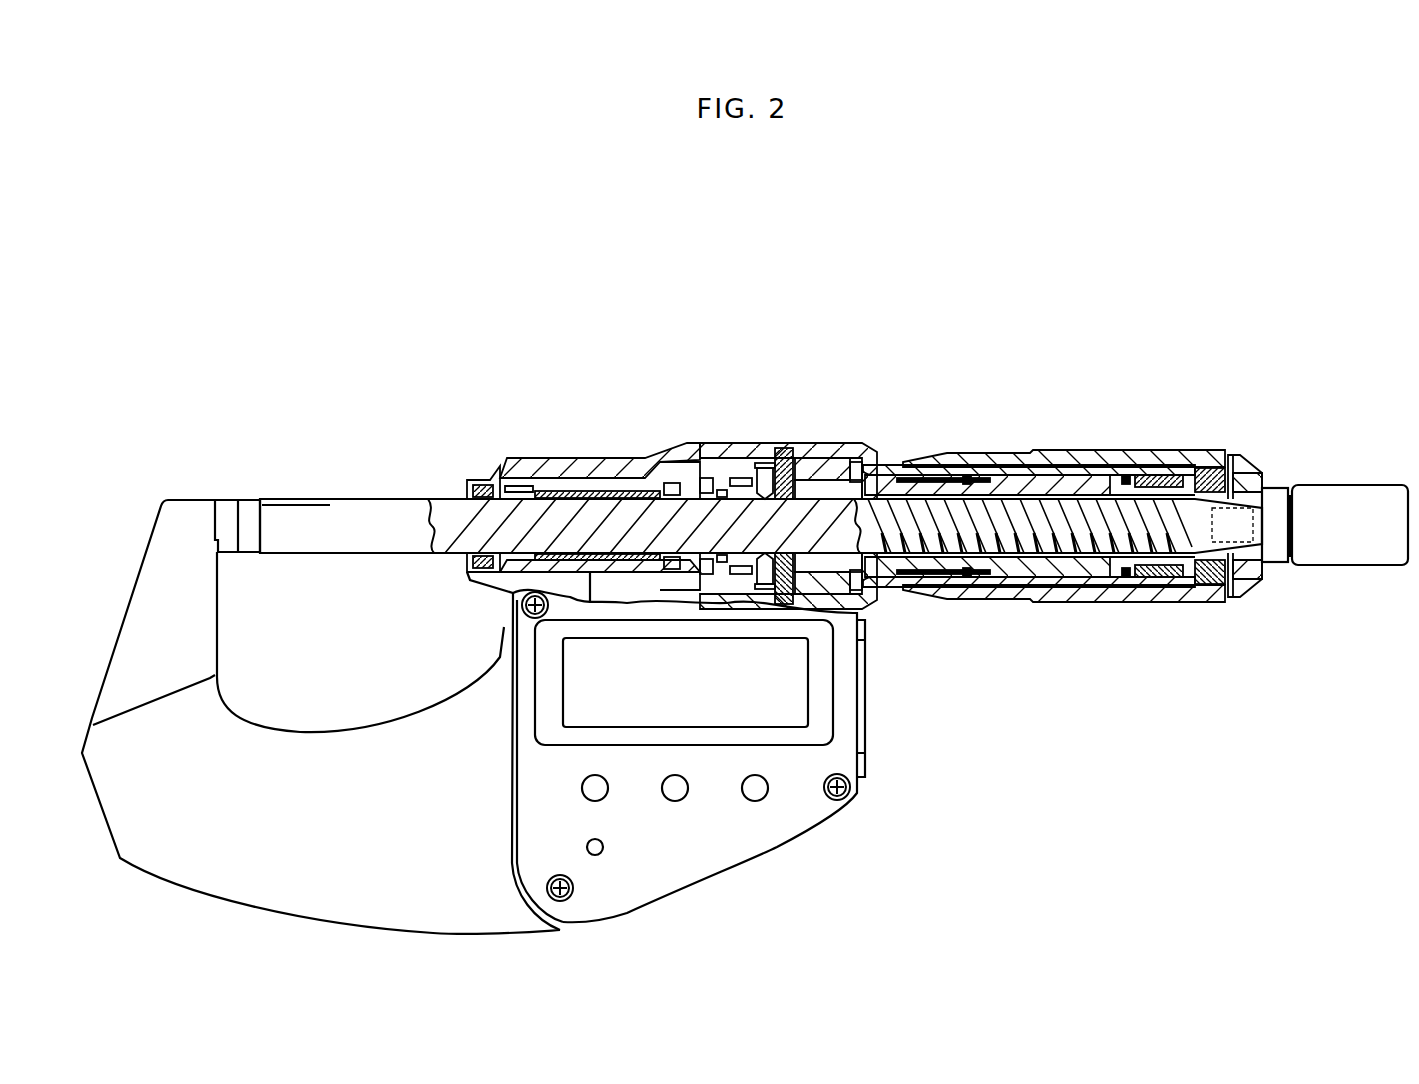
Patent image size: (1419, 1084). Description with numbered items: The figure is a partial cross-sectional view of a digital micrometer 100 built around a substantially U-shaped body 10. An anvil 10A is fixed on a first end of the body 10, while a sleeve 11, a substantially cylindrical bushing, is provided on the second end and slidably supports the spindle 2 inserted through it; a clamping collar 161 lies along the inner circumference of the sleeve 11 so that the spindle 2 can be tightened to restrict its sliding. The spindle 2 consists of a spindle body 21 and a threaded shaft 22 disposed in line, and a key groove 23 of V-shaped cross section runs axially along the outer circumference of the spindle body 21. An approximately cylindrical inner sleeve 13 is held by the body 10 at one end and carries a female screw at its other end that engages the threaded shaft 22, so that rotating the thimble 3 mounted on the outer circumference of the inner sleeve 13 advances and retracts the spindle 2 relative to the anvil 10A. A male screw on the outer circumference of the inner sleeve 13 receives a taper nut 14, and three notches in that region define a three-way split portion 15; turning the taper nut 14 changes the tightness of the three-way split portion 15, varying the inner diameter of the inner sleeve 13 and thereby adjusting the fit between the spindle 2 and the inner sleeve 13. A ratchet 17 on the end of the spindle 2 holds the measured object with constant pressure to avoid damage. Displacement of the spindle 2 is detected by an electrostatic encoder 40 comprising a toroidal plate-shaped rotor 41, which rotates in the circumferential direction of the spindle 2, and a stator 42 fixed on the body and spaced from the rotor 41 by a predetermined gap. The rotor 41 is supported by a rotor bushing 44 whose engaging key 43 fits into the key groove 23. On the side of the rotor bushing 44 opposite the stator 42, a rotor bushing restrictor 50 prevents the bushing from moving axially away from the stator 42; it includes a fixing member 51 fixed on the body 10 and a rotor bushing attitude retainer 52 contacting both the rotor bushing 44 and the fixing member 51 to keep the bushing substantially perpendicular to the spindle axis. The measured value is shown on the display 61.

The digital micrometer 100 is at (768, 273).
The body 10 is at (720, 457).
The anvil 10A is at (220, 500).
The spindle 2 is at (365, 500).
The spindle body 21 is at (307, 500).
The key groove 23 is at (577, 497).
The sleeve 11 is at (482, 472).
The clamping collar 161 is at (567, 497).
The inner sleeve 13 is at (933, 487).
The threaded shaft 22 is at (988, 497).
The thimble 3 is at (1050, 452).
The three-way split portion 15 is at (1085, 483).
The taper nut 14 is at (1153, 477).
The ratchet 17 is at (1320, 493).
The encoder 40 is at (805, 438).
The rotor 41 is at (787, 448).
The stator 42 is at (792, 445).
The engaging key 43 is at (765, 457).
The rotor bushing 44 is at (740, 457).
The rotor bushing restrictor 50 is at (673, 431).
The fixing member 51 is at (697, 457).
The rotor bushing attitude retainer 52 is at (727, 457).
The display 61 is at (778, 697).